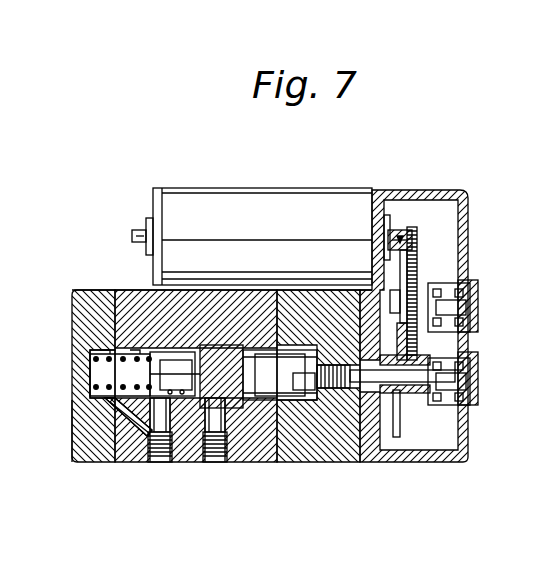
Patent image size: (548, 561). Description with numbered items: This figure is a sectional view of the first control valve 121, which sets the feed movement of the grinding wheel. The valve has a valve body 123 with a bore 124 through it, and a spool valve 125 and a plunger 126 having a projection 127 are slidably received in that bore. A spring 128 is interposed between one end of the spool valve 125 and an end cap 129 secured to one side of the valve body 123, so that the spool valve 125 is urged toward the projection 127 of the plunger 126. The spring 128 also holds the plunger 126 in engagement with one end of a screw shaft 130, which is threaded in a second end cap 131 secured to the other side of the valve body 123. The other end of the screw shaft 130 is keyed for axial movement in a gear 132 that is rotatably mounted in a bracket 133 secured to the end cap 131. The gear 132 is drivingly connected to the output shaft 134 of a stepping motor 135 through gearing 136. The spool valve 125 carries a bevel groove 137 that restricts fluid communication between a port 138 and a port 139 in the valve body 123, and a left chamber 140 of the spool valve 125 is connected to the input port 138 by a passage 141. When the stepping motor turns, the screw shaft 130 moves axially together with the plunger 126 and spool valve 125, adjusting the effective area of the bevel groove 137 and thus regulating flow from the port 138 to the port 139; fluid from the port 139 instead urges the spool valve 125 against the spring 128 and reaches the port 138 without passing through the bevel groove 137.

The first control valve 121 is at (410, 180).
The valve body 123 is at (124, 290).
The bore 124 is at (142, 352).
The spool valve 125 is at (192, 355).
The plunger 126 is at (262, 352).
The projection 127 is at (232, 396).
The spring 128 is at (72, 343).
The end cap 129 is at (76, 442).
The screw shaft 130 is at (316, 348).
The end cap 131 is at (300, 465).
The gear 132 is at (401, 416).
The bracket 133 is at (472, 222).
The output shaft 134 is at (400, 238).
The stepping motor 135 is at (302, 190).
The gearing 136 is at (420, 266).
The bevel groove 137 is at (185, 396).
The port 138 is at (160, 465).
The port 139 is at (216, 465).
The left chamber 140 is at (92, 398).
The passage 141 is at (128, 465).